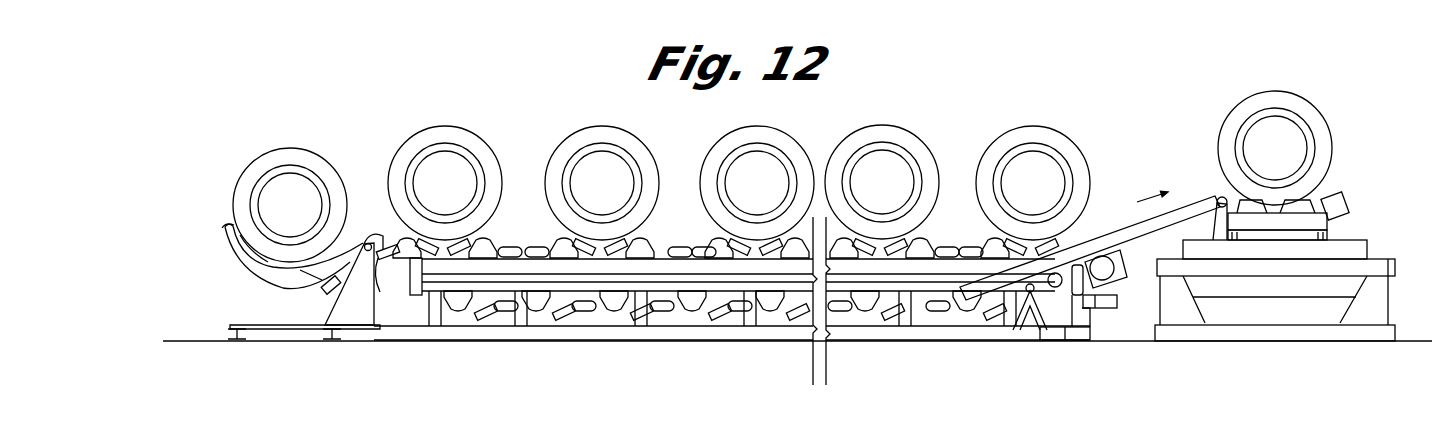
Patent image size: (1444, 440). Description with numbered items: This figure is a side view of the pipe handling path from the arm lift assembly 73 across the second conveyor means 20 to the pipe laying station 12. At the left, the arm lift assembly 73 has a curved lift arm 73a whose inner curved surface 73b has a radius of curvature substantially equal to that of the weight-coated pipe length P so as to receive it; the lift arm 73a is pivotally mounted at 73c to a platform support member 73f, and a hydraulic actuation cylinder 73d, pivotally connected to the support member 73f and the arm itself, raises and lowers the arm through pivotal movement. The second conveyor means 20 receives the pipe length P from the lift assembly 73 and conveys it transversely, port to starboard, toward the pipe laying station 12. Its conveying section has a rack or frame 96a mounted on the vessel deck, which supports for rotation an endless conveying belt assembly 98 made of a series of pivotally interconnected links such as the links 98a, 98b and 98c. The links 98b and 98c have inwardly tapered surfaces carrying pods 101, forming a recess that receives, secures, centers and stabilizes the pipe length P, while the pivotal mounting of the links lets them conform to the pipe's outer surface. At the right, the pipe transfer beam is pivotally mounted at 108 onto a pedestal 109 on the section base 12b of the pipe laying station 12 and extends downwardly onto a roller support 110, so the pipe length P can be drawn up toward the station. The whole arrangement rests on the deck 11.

The floor 11 is at (1407, 341).
The pipe laying station 12 is at (1286, 235).
The section base 12b is at (1362, 240).
The second conveyor means 20 is at (557, 147).
The arm lift assembly 73 is at (262, 248).
The curved lift arm 73a is at (225, 237).
The inner curved surface 73b is at (251, 240).
The pivot mounting 73c is at (367, 241).
The hydraulic actuation cylinder 73d is at (326, 290).
The platform support member 73f is at (308, 290).
The rack or frame 96a is at (1080, 318).
The endless conveying belt assembly 98 is at (716, 278).
The belt link 98a is at (683, 247).
The belt link 98b is at (612, 243).
The belt link 98c is at (1018, 250).
The pods 101 is at (870, 240).
The pivotal mounting 108 is at (1218, 198).
The pedestal 109 is at (1216, 232).
The roller support 110 is at (1017, 320).
The pipe length P is at (303, 149).